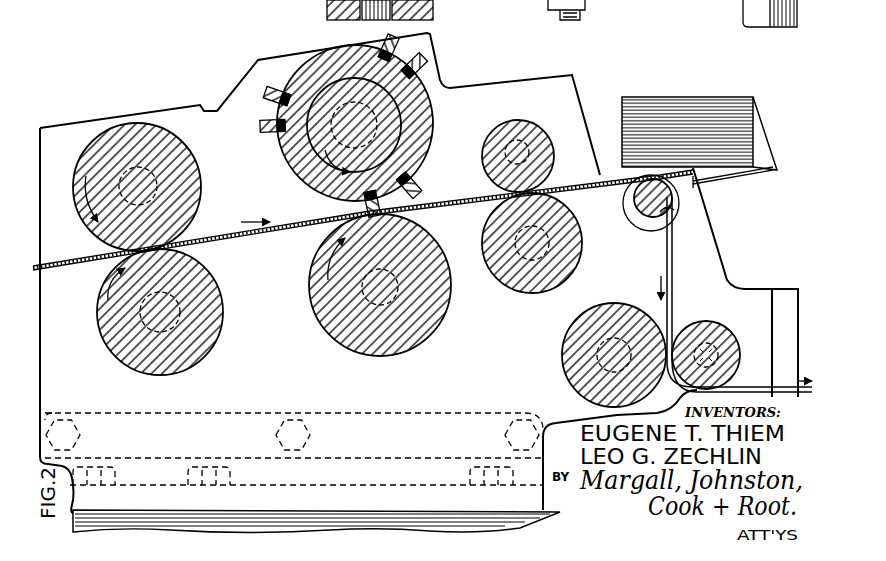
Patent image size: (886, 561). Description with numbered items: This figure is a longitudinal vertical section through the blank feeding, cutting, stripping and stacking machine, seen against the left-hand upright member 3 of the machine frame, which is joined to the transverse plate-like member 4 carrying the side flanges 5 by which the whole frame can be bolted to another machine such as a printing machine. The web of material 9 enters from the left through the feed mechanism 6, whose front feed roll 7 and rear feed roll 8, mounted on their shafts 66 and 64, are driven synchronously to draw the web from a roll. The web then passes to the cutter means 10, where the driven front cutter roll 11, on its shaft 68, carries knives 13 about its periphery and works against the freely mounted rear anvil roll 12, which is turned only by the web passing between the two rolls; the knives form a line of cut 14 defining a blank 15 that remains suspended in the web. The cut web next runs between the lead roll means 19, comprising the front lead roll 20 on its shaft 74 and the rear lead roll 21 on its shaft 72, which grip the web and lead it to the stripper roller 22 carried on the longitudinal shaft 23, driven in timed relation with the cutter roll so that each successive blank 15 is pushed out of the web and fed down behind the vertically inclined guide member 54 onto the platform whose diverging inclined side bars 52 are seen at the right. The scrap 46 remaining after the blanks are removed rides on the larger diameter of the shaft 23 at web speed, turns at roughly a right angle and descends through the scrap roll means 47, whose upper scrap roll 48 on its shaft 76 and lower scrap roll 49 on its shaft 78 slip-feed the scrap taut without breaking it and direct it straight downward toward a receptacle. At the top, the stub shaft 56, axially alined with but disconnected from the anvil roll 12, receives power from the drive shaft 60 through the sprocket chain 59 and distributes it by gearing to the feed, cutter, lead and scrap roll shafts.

The left-hand upright member 3 is at (183, 114).
The transverse plate-like member 4 is at (268, 415).
The side flanges 5 is at (153, 500).
The feed mechanism 6 is at (92, 136).
The front feed roll 7 is at (125, 128).
The rear feed roll 8 is at (208, 283).
The web of material 9 is at (290, 226).
The cutter means 10 is at (322, 48).
The front cutter roll 11 is at (298, 62).
The rear anvil roll 12 is at (345, 347).
The knives 13 is at (275, 90).
The line of cut 14 is at (426, 204).
The blank 15 is at (621, 100).
The lead roll means 19 is at (486, 184).
The front lead roll 20 is at (487, 136).
The rear lead roll 21 is at (512, 289).
The stripper roller 22 is at (628, 212).
The longitudinal shaft 23 is at (665, 208).
The scrap 46 is at (748, 382).
The scrap roll means 47 is at (650, 304).
The upper scrap roll 48 is at (562, 356).
The lower scrap roll 49 is at (710, 326).
The inclined side bars 52 is at (766, 155).
The vertically inclined guide member 54 is at (718, 183).
The stub shaft 56 is at (375, 23).
The sprocket chain 59 is at (644, 2).
The drive shaft 60 is at (746, 7).
The shaft of the rear feed roll 64 is at (140, 318).
The shaft of the front feed roll 66 is at (152, 172).
The shaft of the cutter roll 68 is at (287, 158).
The roller shaft 72 is at (566, 257).
The shaft of the front lead roll 74 is at (521, 143).
The shaft of the upper scrap roll 76 is at (578, 345).
The shaft of the lower scrap roll 78 is at (720, 337).